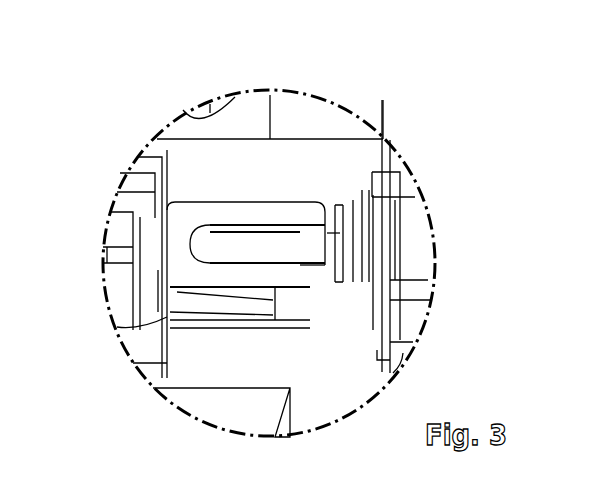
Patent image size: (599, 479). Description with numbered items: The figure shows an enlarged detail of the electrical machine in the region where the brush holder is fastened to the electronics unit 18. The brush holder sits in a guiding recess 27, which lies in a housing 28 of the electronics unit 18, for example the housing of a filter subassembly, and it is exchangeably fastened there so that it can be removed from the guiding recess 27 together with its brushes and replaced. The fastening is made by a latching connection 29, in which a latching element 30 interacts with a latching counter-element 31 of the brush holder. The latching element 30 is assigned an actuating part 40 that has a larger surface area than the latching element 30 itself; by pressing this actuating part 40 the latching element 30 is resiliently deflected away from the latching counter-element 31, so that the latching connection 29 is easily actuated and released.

The electronics unit 18 is at (118, 135).
The guiding recess 27 is at (170, 318).
The housing 28 is at (178, 162).
The latching connection 29 is at (366, 183).
The latching element 30 is at (335, 263).
The latching counter-element 31 is at (335, 306).
The actuating part 40 is at (335, 218).